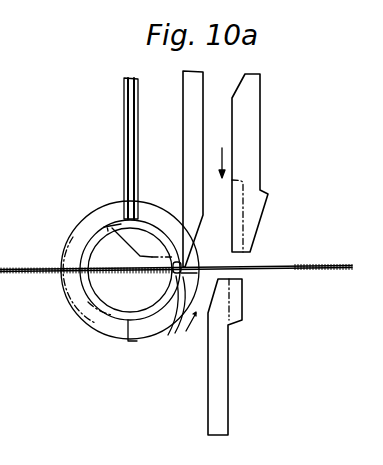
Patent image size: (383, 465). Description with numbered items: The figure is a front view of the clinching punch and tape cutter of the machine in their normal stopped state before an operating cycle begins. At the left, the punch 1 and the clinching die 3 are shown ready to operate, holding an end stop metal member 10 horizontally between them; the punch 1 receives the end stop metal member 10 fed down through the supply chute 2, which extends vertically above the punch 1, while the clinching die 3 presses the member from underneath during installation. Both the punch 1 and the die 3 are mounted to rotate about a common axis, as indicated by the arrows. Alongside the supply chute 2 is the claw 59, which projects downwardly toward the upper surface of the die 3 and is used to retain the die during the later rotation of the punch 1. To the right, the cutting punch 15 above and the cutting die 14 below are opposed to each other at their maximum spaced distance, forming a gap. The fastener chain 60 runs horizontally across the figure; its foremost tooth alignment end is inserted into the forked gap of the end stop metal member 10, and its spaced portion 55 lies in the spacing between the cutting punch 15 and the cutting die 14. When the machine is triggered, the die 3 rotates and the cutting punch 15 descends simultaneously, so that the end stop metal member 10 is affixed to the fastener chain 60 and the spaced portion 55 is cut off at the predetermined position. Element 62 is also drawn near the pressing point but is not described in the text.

The punch 1 is at (115, 223).
The supply chute 2 is at (124, 103).
The clinching die 3 is at (137, 322).
The end stop metal member 10 is at (173, 322).
The cutting die 14 is at (222, 370).
The cutting punch 15 is at (253, 107).
The spaced portion 55 is at (263, 267).
The claw 59 is at (184, 123).
The fastener chain 60 is at (63, 265).
The pin 62 is at (176, 274).